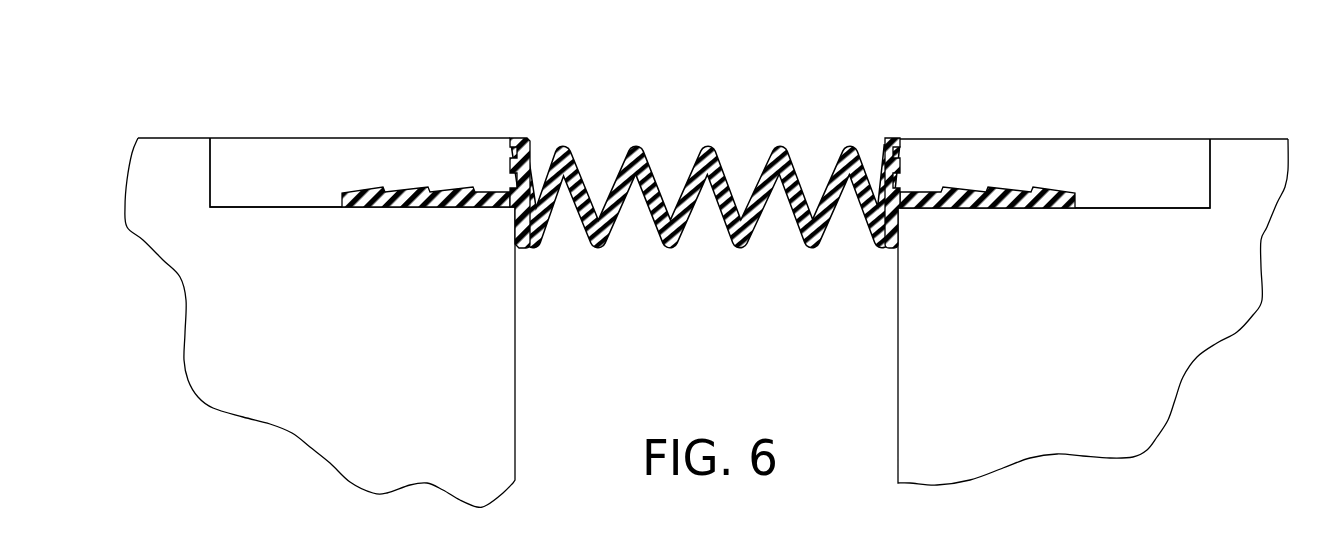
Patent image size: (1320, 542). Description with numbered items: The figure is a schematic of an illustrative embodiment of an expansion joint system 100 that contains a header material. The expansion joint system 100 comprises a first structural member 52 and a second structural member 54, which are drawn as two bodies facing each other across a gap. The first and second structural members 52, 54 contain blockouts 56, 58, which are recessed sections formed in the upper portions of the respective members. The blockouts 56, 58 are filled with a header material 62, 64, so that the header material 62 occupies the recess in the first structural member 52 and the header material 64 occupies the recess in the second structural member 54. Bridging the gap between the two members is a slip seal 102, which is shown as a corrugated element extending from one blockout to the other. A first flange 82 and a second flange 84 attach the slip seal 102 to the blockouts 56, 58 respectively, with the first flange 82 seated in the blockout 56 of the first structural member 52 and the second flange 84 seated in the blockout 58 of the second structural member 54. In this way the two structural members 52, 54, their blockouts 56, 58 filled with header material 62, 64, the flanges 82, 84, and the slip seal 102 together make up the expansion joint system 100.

The expansion joint system 100 is at (640, 72).
The slip seal 102 is at (704, 140).
The first structural member 52 is at (162, 143).
The second structural member 54 is at (1257, 147).
The blockout 56 is at (213, 148).
The blockout 58 is at (1208, 148).
The header material 62 is at (320, 155).
The header material 64 is at (1097, 158).
The first flange 82 is at (438, 188).
The second flange 84 is at (975, 190).